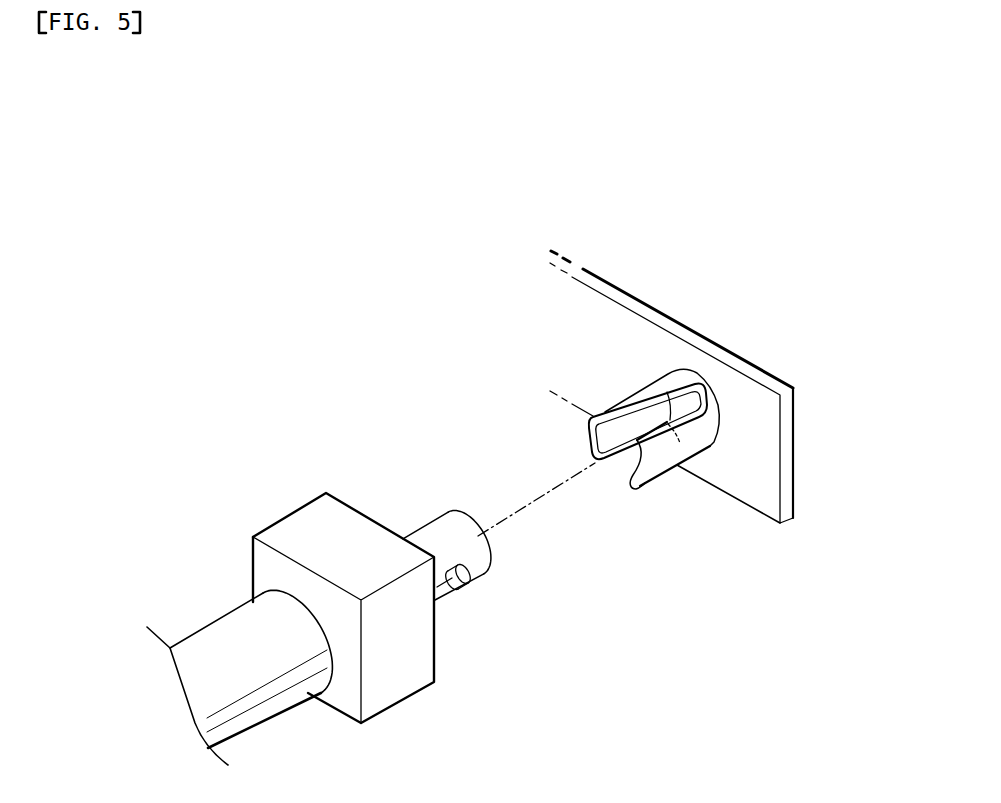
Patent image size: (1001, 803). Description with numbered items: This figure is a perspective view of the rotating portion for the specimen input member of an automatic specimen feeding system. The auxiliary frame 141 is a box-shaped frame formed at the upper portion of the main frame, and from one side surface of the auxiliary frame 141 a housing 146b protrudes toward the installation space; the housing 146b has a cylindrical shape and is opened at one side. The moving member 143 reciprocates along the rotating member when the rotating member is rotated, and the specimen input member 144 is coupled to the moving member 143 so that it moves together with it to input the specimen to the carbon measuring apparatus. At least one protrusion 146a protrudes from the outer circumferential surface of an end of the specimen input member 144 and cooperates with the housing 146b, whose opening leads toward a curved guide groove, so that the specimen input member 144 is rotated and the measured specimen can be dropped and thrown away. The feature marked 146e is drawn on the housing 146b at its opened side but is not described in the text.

The auxiliary frame 141 is at (720, 346).
The moving member 143 is at (400, 683).
The specimen input member 144 is at (245, 703).
The protrusion 146a is at (467, 582).
The housing 146b is at (654, 386).
The guide lip 146e is at (638, 388).